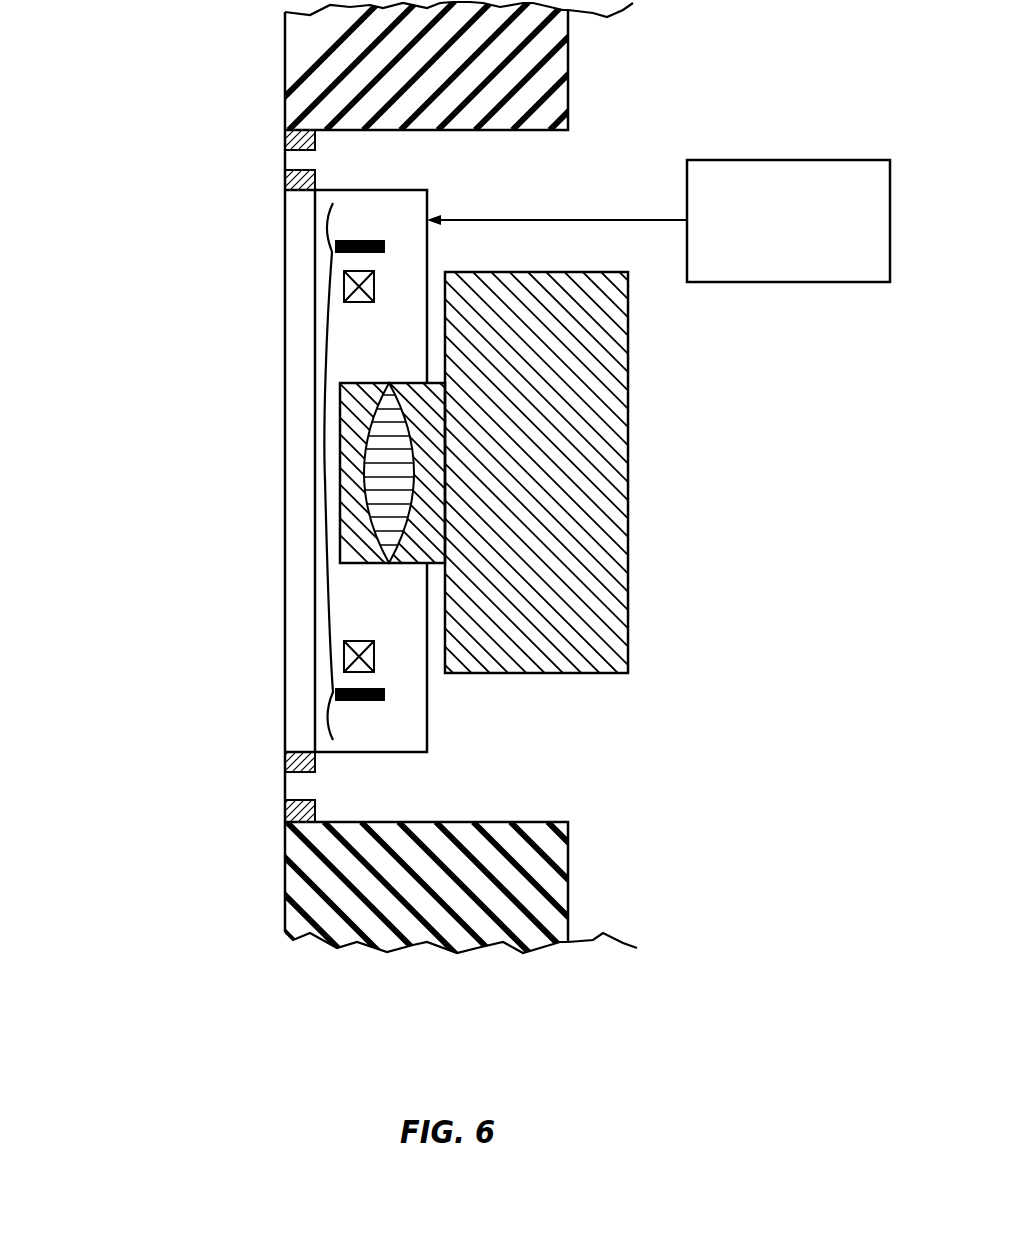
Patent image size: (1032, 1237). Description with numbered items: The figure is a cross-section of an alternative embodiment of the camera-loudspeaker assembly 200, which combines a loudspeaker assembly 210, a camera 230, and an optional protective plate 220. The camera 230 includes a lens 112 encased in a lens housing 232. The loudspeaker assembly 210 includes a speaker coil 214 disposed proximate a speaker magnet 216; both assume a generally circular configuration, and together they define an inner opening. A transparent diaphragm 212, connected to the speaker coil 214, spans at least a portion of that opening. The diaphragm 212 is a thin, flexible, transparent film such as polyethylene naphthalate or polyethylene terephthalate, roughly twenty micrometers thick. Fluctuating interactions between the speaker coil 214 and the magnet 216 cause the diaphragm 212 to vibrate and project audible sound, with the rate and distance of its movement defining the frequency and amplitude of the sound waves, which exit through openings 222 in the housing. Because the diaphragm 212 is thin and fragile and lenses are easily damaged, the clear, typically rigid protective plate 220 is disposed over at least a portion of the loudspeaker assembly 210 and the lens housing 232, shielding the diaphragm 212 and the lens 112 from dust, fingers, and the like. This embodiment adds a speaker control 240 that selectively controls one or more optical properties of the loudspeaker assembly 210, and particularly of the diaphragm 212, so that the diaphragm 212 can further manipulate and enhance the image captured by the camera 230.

The camera-loudspeaker assembly 200 is at (135, 431).
The lens 112 is at (383, 507).
The loudspeaker assembly 210 is at (385, 753).
The transparent diaphragm 212 is at (330, 363).
The speaker coil 214 is at (335, 246).
The speaker magnet 216 is at (374, 285).
The protective plate 220 is at (298, 392).
The openings 222 is at (276, 158).
The camera 230 is at (592, 492).
The lens housing 232 is at (358, 563).
The speaker control 240 is at (833, 160).